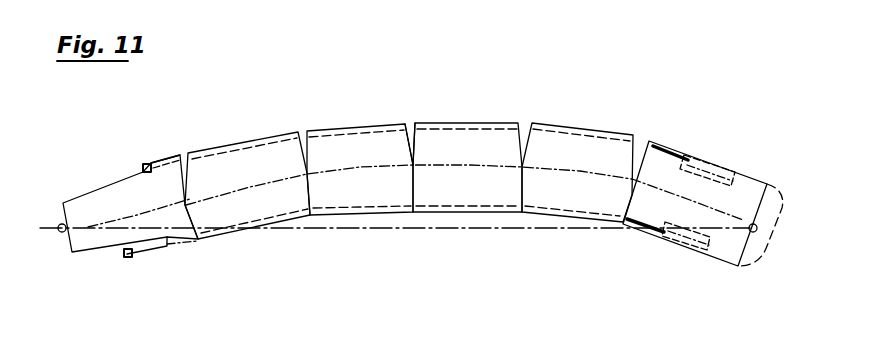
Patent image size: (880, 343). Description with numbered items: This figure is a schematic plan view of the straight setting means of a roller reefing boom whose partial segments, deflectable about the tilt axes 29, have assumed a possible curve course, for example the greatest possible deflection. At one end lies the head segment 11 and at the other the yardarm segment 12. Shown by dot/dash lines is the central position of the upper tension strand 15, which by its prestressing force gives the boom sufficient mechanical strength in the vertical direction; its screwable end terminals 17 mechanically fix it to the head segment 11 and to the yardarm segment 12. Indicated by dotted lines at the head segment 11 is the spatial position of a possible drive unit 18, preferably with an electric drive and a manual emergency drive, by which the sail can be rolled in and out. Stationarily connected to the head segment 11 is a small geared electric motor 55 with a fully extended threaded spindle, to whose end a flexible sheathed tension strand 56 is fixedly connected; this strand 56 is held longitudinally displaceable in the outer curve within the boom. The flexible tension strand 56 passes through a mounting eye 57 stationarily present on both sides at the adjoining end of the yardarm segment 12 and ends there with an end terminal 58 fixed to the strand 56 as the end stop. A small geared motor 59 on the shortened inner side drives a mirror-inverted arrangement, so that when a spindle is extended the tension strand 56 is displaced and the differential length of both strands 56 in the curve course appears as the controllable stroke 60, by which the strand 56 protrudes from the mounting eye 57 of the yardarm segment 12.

The head segment 11 is at (727, 248).
The yardarm segment 12 is at (93, 245).
The upper tension strand 15 is at (331, 174).
The screwable end terminals 17 is at (58, 227).
The drive unit 18 is at (750, 261).
The tilt axes 29 is at (414, 168).
The small geared electric motor 55 is at (716, 167).
The flexible sheathed tension strand 56 is at (608, 135).
The mounting eye 57 is at (164, 160).
The end terminal 58 is at (142, 167).
The small geared motor 59 is at (688, 248).
The controllable stroke 60 is at (148, 252).